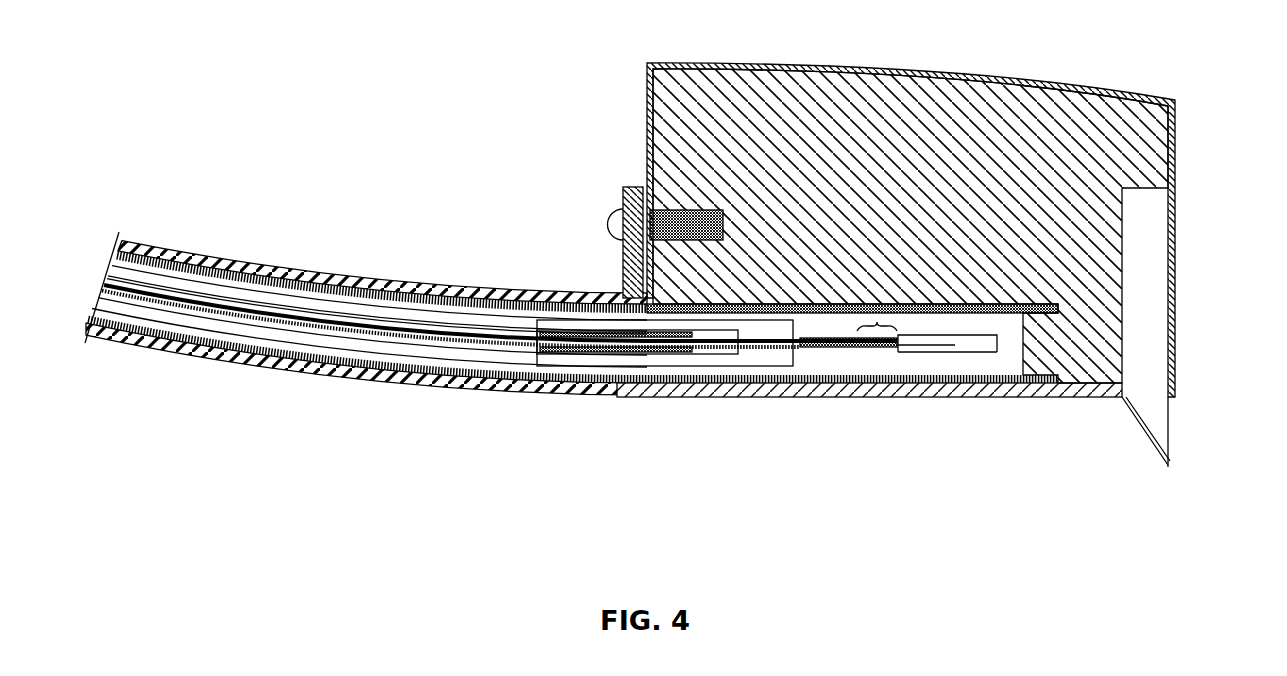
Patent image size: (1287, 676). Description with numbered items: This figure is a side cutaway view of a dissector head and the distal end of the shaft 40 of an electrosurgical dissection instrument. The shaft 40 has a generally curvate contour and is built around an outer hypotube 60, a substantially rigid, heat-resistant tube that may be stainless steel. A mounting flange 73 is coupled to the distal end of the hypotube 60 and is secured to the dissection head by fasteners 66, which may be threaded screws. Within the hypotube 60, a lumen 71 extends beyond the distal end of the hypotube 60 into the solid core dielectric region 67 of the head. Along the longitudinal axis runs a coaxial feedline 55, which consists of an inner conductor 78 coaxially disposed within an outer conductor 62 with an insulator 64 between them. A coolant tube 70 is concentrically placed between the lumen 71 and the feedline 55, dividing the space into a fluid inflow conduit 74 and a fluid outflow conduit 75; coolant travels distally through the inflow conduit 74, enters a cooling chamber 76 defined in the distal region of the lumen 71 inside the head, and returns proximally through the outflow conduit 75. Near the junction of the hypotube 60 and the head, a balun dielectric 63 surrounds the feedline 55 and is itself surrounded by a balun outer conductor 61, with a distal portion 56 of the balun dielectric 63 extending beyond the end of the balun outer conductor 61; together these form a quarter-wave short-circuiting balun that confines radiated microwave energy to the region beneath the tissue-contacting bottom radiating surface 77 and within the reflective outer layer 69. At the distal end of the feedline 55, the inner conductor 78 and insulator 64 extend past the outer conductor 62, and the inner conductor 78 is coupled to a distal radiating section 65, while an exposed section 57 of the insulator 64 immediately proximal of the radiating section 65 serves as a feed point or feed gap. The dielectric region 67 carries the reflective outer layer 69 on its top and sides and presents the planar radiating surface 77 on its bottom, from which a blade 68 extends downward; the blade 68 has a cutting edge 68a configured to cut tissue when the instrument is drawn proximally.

The shaft 40 is at (164, 171).
The coaxial feedline 55 is at (631, 349).
The distal portion of balun dielectric 56 is at (738, 302).
The exposed section of insulator 57 is at (859, 242).
The outer hypotube 60 is at (232, 262).
The balun outer conductor 61 is at (538, 360).
The outer conductor 62 is at (434, 348).
The balun dielectric 63 is at (715, 356).
The insulator 64 is at (852, 348).
The distal radiating section 65 is at (984, 358).
The fastener 66 is at (614, 224).
The dielectric region 67 is at (988, 127).
The blade 68 is at (1155, 413).
The cutting edge 68a is at (1140, 430).
The reflective outer layer 69 is at (1118, 84).
The coolant tube 70 is at (325, 312).
The lumen 71 is at (390, 308).
The mounting flange 73 is at (628, 290).
The fluid inflow conduit 74 is at (277, 312).
The fluid outflow conduit 75 is at (608, 372).
The cooling chamber 76 is at (915, 352).
The bottom radiating surface 77 is at (1050, 398).
The inner conductor 78 is at (110, 288).